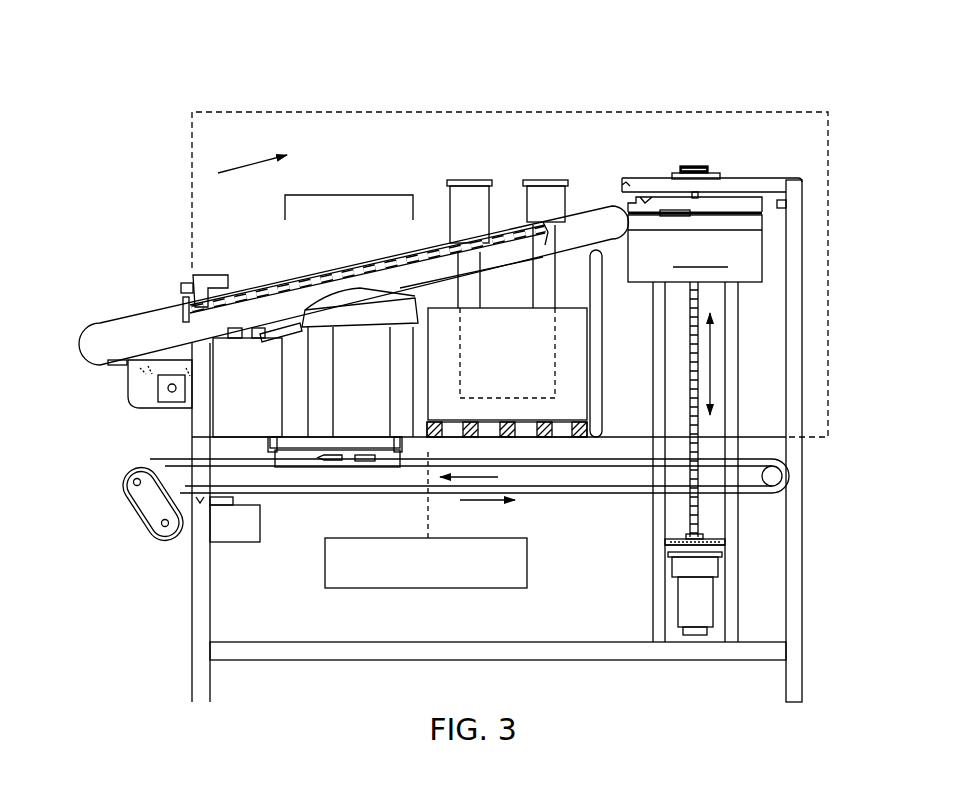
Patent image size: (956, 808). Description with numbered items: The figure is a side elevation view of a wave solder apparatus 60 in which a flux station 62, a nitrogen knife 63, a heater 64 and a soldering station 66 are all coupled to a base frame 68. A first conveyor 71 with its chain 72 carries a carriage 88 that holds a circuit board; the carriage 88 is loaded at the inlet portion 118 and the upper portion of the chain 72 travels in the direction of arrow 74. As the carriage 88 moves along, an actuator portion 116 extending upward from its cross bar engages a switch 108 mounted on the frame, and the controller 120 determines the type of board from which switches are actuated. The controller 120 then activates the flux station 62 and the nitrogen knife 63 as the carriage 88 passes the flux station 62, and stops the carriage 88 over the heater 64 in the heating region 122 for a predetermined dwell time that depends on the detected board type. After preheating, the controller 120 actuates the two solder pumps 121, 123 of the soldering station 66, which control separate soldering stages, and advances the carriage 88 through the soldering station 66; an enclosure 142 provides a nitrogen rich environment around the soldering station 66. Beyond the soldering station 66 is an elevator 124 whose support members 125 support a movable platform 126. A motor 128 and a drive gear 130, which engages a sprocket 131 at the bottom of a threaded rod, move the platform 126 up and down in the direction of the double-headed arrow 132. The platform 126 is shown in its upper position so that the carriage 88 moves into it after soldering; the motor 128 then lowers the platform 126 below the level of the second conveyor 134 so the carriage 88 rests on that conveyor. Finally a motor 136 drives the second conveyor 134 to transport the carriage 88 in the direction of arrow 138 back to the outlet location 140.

The wave solder apparatus 60 is at (146, 147).
The enclosure 142 is at (332, 112).
The arrow 74 is at (242, 165).
The heating region 122 is at (353, 193).
The solder pump 121 is at (458, 177).
The solder pump 123 is at (545, 188).
The elevator 124 is at (697, 163).
The support members 125 is at (733, 323).
The movable platform 126 is at (695, 237).
The carriage 88 is at (660, 213).
The double-headed arrow 132 is at (710, 373).
The sprocket 131 is at (682, 545).
The drive gear 130 is at (725, 542).
The motor 128 is at (698, 604).
The inlet portion 118 is at (86, 318).
The chain 72 is at (342, 277).
The switch 108 is at (188, 283).
The actuator portion 116 is at (183, 305).
The nitrogen knife 63 is at (280, 325).
The first conveyor 71 is at (123, 368).
The flux station 62 is at (270, 353).
The heater 64 is at (362, 328).
The soldering station 66 is at (552, 342).
The second conveyor 134 is at (568, 493).
The outlet location 140 is at (158, 441).
The base frame 68 is at (198, 578).
The motor 136 is at (235, 527).
The arrow 138 is at (328, 462).
The controller 120 is at (468, 580).